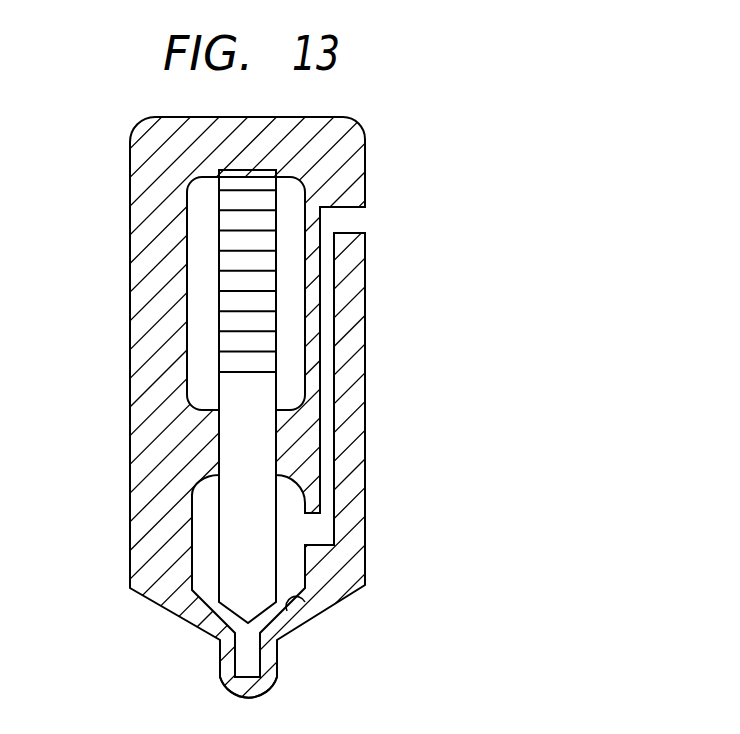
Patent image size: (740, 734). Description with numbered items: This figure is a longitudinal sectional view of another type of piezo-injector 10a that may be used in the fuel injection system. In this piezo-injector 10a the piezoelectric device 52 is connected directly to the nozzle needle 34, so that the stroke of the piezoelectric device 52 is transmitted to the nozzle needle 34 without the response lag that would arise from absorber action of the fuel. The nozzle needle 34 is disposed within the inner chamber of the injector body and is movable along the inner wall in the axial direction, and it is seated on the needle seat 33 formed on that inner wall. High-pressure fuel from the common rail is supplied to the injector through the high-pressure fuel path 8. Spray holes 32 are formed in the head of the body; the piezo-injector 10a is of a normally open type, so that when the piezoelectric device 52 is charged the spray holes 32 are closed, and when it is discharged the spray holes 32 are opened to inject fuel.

The piezo-injector 10a is at (470, 209).
The piezoelectric device 52 is at (241, 174).
The high-pressure fuel path 8 is at (347, 233).
The nozzle needle 34 is at (257, 538).
The needle seat 33 is at (300, 599).
The spray holes 32 is at (218, 687).